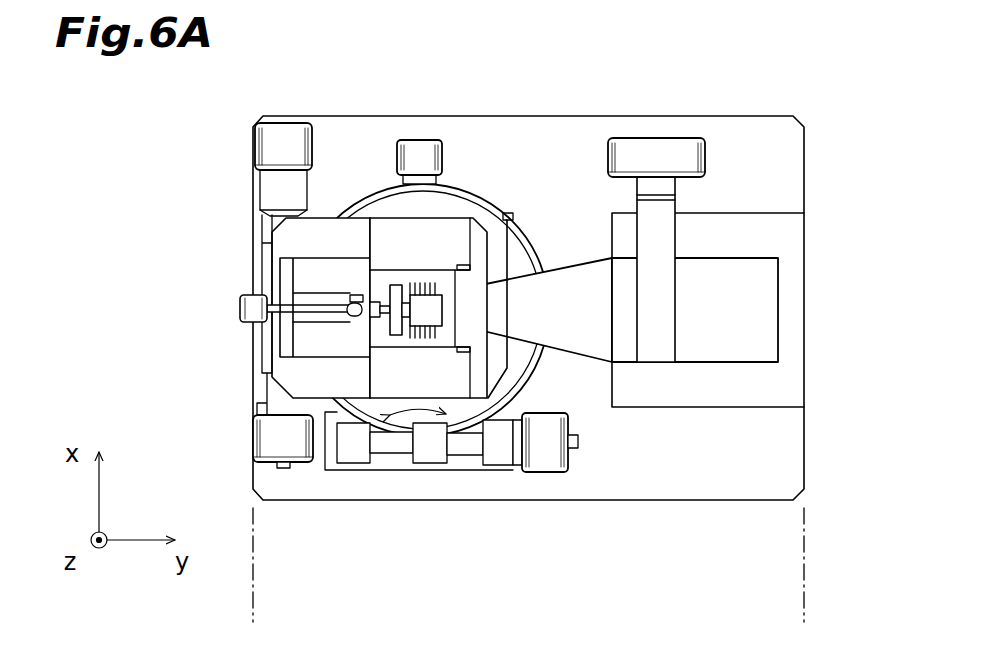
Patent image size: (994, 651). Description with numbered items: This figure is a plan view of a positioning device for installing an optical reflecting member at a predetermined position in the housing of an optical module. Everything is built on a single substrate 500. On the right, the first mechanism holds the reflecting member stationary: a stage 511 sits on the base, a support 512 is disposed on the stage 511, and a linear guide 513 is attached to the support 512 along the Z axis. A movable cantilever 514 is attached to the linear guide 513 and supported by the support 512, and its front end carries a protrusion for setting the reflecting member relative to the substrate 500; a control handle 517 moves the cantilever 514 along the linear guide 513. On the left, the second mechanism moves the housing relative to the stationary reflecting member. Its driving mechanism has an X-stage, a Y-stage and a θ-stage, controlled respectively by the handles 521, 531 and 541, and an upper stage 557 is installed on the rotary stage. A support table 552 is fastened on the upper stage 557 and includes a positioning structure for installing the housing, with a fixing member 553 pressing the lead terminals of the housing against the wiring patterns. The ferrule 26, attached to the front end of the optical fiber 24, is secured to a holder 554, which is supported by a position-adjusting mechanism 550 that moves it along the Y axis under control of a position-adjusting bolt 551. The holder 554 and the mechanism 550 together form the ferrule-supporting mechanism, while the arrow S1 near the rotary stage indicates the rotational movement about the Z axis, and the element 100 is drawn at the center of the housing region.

The substrate 500 is at (797, 135).
The stage 511 is at (788, 390).
The support 512 is at (773, 335).
The linear guide 513 is at (673, 301).
The movable cantilever 514 is at (583, 277).
The control handle 517 is at (667, 152).
The handle 521 is at (265, 143).
The handle 531 is at (545, 463).
The handle 541 is at (418, 156).
The position-adjusting mechanism 550 is at (327, 348).
The position-adjusting bolt 551 is at (242, 316).
The support table 552 is at (467, 236).
The fixing member 553 is at (527, 372).
The holder 554 is at (363, 296).
The upper stage 557 is at (287, 241).
The piezoelectric actuator 100 is at (422, 276).
The optical fiber 24 is at (240, 309).
The ferrule 26 is at (357, 322).
The swing direction S1 is at (421, 420).